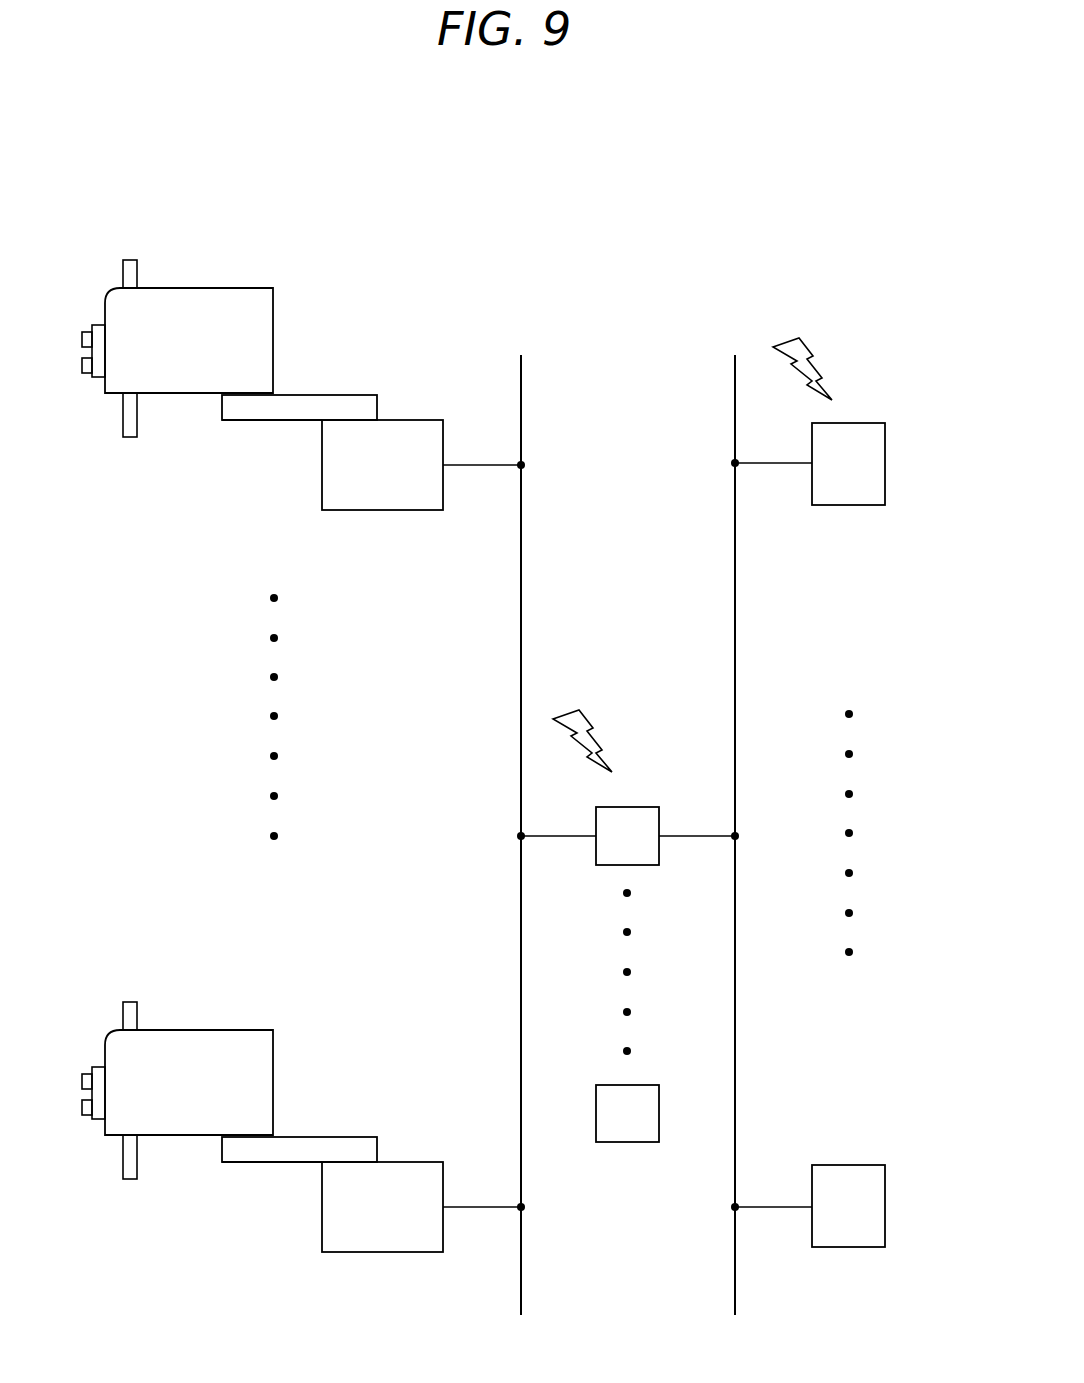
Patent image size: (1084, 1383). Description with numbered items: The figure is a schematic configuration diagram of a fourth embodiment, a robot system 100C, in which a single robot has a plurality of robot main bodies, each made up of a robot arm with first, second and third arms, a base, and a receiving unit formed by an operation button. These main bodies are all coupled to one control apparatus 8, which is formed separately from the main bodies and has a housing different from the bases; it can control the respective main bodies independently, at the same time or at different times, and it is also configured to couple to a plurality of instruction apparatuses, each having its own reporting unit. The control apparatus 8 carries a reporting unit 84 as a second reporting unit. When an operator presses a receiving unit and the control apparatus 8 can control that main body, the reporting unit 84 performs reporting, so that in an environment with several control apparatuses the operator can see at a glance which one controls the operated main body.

The robot system 100C is at (688, 172).
The control apparatus 8 is at (628, 783).
The reporting unit 84 is at (626, 832).